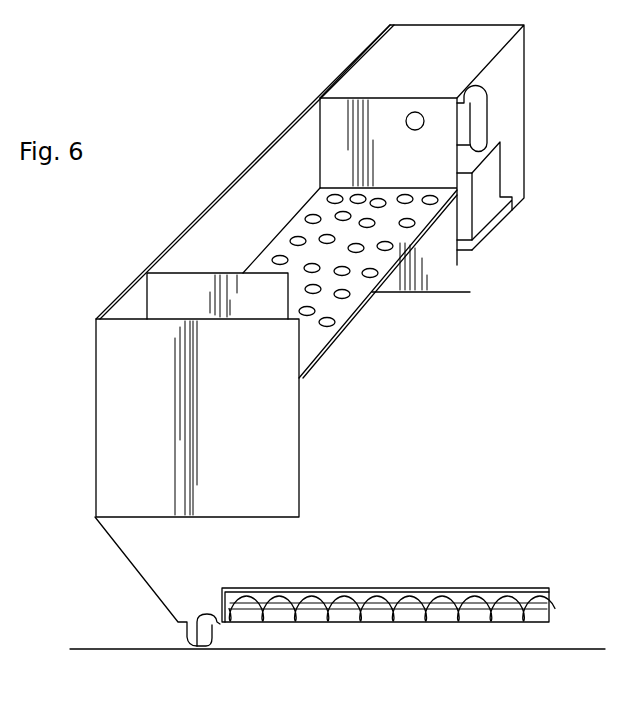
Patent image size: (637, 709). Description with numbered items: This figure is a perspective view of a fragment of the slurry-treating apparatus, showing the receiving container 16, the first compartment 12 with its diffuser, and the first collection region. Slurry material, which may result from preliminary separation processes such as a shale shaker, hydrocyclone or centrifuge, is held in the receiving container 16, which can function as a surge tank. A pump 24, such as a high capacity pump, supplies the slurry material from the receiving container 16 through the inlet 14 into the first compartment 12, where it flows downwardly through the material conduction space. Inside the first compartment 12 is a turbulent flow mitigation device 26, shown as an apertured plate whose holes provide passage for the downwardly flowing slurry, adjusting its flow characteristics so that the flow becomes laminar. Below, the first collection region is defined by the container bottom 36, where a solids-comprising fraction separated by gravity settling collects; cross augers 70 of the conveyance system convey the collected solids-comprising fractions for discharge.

The first compartment 12 is at (287, 163).
The inlet 14 is at (407, 118).
The receiving container 16 is at (507, 101).
The pump 24 is at (495, 180).
The turbulent flow mitigation device 26 is at (367, 305).
The container bottom 36 is at (220, 624).
The cross augers 70 is at (513, 620).